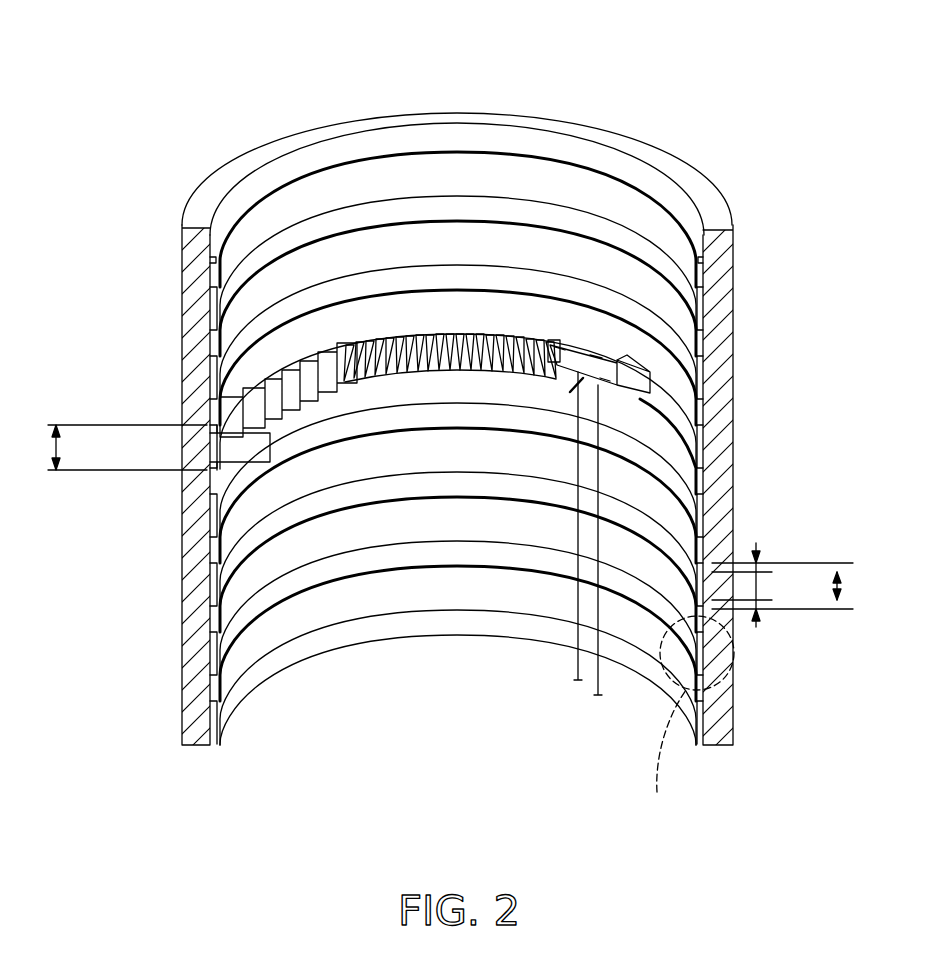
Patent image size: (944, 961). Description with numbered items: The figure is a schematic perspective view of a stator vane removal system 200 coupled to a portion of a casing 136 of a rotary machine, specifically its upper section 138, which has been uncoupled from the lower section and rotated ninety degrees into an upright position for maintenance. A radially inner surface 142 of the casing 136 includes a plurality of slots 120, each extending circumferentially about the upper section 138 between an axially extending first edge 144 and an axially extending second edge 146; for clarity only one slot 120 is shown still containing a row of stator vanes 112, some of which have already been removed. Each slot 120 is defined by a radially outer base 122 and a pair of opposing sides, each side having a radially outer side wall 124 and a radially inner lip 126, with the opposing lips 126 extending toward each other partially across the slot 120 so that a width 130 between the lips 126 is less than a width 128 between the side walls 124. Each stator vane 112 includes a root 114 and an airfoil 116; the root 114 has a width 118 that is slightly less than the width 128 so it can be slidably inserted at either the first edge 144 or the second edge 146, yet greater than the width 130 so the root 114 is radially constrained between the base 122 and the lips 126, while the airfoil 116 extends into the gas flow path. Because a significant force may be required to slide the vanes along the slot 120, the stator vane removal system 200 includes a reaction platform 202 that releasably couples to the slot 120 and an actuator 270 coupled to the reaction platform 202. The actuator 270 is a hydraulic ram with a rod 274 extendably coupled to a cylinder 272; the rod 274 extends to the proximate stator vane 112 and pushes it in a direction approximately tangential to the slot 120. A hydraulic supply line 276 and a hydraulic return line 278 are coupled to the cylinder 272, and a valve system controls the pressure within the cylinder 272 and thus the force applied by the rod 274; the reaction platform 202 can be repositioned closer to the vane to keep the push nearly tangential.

The stator vane 112 is at (380, 347).
The root 114 is at (207, 437).
The airfoil 116 is at (247, 448).
The width of root 118 is at (57, 452).
The slot 120 is at (727, 347).
The radially outer base 122 is at (712, 455).
The side wall 124 is at (712, 484).
The lip 126 is at (717, 535).
The width of slot between side walls 128 is at (838, 592).
The width of slot between lips 130 is at (757, 627).
The casing 136 is at (451, 417).
The upper section 138 is at (572, 85).
The radially inner surface 142 is at (508, 168).
The first edge 144 is at (740, 236).
The second edge 146 is at (196, 242).
The stator vane removal system 200 is at (579, 387).
The reaction platform 202 is at (628, 353).
The actuator 270 is at (598, 358).
The cylinder 272 is at (605, 380).
The rod 274 is at (562, 347).
The hydraulic supply line 276 is at (598, 695).
The hydraulic return line 278 is at (578, 680).